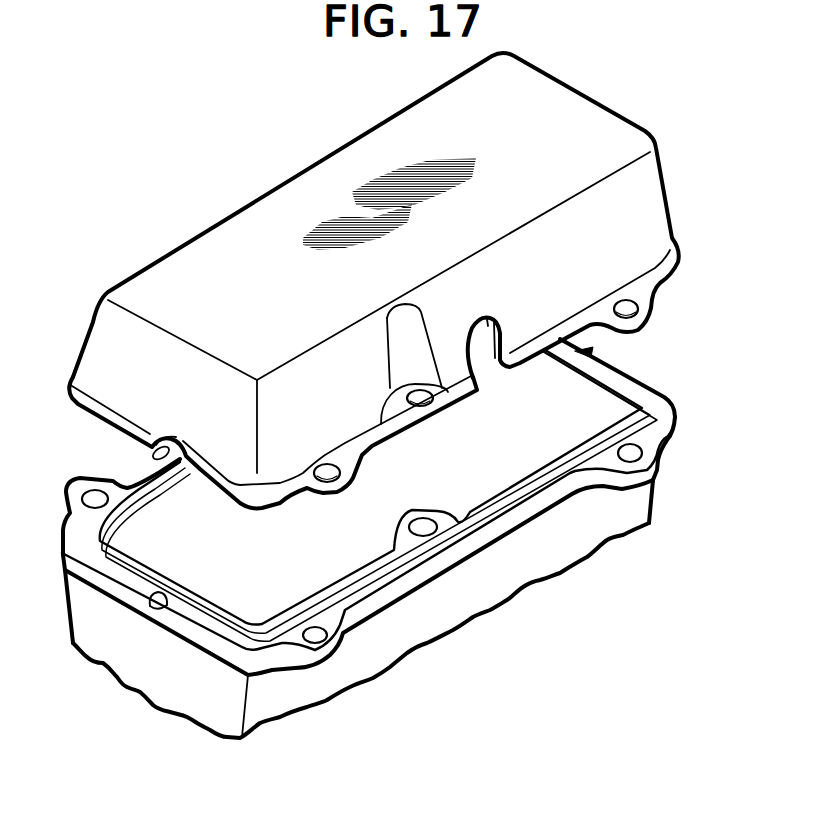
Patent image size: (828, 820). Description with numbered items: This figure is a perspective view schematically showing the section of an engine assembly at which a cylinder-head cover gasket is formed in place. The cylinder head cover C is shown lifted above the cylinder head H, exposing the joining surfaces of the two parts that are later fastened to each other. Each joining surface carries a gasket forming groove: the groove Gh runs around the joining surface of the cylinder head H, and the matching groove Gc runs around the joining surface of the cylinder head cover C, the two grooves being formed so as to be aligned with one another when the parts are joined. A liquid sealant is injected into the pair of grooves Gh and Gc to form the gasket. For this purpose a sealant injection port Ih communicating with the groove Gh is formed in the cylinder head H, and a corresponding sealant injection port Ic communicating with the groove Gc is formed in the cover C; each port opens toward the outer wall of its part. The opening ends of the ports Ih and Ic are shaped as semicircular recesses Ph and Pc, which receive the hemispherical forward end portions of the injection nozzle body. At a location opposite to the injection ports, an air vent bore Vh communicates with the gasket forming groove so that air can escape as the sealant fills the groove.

The cylinder head cover C is at (651, 203).
The cylinder head H is at (481, 594).
The semicircular recess Pc is at (160, 428).
The sealant injection port Ic is at (162, 452).
The gasket forming groove Gc is at (506, 362).
The gasket forming groove Gh is at (497, 503).
The air vent bore Vh is at (593, 350).
The sealant injection port Ih is at (158, 605).
The semicircular recess Ph is at (158, 606).